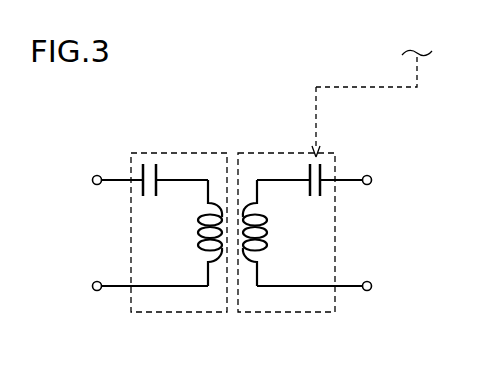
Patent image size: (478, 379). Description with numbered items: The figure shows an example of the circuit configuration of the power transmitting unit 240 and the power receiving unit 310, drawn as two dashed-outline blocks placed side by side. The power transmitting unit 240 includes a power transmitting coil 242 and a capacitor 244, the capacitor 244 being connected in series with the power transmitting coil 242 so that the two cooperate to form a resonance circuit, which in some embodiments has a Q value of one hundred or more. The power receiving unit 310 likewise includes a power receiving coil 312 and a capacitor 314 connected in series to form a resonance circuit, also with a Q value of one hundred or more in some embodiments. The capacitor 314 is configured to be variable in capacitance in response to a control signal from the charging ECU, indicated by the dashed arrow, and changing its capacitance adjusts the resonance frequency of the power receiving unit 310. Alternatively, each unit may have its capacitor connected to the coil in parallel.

The power transmitting unit 240 is at (202, 153).
The power transmitting coil 242 is at (197, 252).
The capacitor 244 is at (156, 169).
The power receiving unit 310 is at (262, 153).
The power receiving coil 312 is at (263, 246).
The capacitor 314 is at (324, 169).